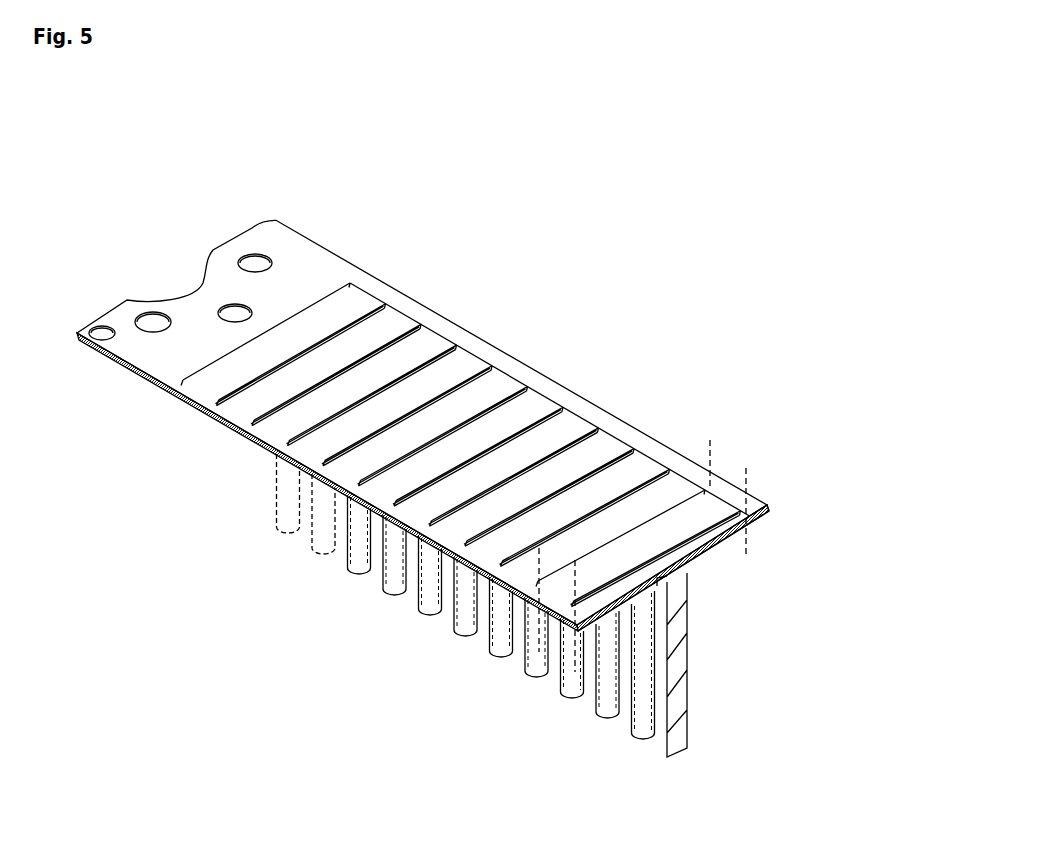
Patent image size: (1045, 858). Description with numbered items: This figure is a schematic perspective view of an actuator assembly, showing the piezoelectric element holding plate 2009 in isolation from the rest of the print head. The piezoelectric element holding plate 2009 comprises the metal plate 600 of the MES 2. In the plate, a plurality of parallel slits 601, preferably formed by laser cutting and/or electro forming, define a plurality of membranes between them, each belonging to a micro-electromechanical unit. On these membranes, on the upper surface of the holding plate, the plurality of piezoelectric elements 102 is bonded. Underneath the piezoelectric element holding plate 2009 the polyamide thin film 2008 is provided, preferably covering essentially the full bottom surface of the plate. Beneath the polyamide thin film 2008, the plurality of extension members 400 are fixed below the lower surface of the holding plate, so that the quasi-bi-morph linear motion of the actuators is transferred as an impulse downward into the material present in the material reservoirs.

The MES 2 is at (676, 298).
The slits 601 is at (722, 478).
The piezoelectric elements 102 is at (759, 500).
The piezoelectric element holding plate 2009 is at (942, 523).
The metal plate 600 is at (786, 536).
The polyamide thin film 2008 is at (742, 559).
The extension members 400 is at (706, 630).